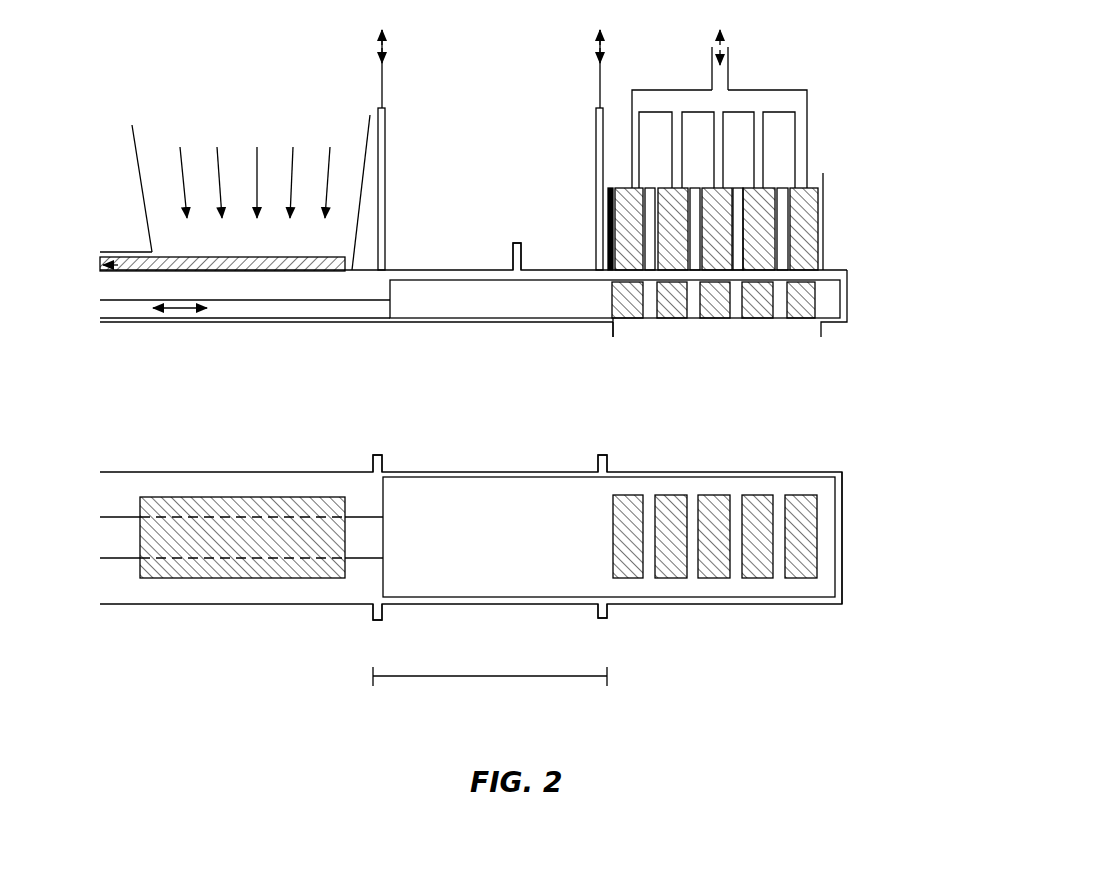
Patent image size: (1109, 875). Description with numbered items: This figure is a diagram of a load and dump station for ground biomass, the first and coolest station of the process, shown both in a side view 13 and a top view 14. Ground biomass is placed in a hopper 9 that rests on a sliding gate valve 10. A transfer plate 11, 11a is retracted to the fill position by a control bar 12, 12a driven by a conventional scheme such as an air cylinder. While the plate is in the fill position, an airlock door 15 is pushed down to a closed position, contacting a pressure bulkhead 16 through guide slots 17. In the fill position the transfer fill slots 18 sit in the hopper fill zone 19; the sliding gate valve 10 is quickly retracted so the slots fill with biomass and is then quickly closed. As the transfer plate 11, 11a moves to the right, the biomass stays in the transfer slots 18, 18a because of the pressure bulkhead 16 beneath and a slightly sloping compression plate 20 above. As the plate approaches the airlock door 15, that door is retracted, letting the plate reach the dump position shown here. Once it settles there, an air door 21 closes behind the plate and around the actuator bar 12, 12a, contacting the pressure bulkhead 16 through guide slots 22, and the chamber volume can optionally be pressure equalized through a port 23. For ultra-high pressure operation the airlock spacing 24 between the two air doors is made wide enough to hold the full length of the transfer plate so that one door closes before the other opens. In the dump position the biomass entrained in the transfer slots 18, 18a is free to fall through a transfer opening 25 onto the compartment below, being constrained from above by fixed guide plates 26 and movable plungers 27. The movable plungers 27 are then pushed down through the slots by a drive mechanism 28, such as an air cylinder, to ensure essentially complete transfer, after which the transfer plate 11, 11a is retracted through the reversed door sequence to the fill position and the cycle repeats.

The hopper 9 is at (205, 118).
The sliding gate valve 10 is at (137, 250).
The transfer plate 11 is at (513, 308).
The transfer plate 11a is at (495, 580).
The control bar 12 is at (323, 313).
The control bar 12a is at (113, 532).
The side view 13 is at (868, 308).
The top view 14 is at (860, 522).
The airlock door 15 is at (595, 137).
The pressure bulkhead 16 is at (828, 252).
The guide slots 17 is at (602, 452).
The transfer fill slots 18 is at (806, 292).
The transfer slots 18a is at (755, 512).
The hopper fill zone 19 is at (240, 532).
The compression plate 20 is at (476, 262).
The air door 21 is at (390, 137).
The guide slots 22 is at (378, 452).
The port 23 is at (517, 240).
The airlock spacing 24 is at (490, 678).
The transfer opening 25 is at (766, 332).
The fixed guide plates 26 is at (782, 203).
The movable plungers 27 is at (806, 225).
The drive mechanism 28 is at (736, 60).